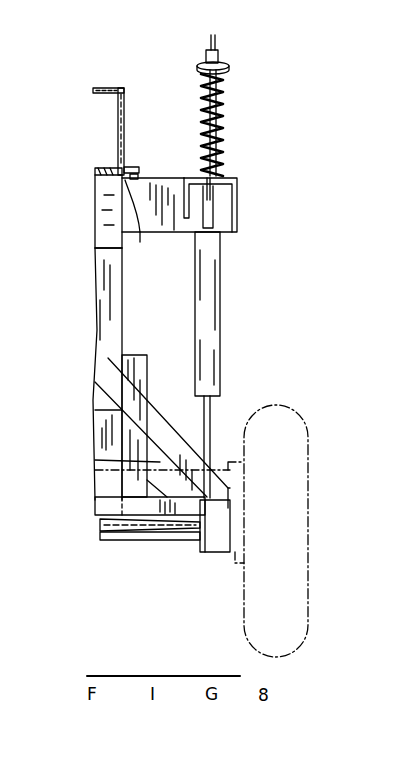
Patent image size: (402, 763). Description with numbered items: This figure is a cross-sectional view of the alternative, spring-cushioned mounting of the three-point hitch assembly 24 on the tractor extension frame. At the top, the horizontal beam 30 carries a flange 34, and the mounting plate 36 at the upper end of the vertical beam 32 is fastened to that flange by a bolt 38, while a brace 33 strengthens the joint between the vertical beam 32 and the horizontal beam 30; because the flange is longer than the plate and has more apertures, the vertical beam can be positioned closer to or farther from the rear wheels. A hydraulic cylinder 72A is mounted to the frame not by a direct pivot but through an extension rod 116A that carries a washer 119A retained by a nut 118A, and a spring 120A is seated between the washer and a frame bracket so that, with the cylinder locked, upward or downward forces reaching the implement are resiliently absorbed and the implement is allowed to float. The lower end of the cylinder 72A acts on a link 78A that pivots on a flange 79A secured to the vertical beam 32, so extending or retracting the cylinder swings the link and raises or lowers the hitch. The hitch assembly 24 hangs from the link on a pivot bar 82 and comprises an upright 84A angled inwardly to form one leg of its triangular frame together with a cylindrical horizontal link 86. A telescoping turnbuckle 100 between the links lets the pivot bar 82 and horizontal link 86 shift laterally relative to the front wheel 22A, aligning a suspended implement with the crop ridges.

The extension rod 116A is at (213, 50).
The nut 118A is at (220, 60).
The washer 119A is at (229, 68).
The spring 120A is at (221, 101).
The horizontal beam 30 is at (117, 88).
The flange 34 is at (131, 158).
The bolt 38 is at (138, 166).
The brace 33 is at (96, 243).
The mounting plate 36 is at (179, 218).
The vertical beam 32 is at (100, 300).
The flange 79A is at (137, 355).
The three-point hitch assembly 24 is at (84, 380).
The cylinder 72A is at (220, 272).
The upright 84A is at (177, 442).
The horizontal link 86 is at (97, 503).
The turnbuckle 100 is at (102, 527).
The pivot bar 82 is at (137, 540).
The link 78A is at (187, 545).
The front wheel 22A is at (244, 628).